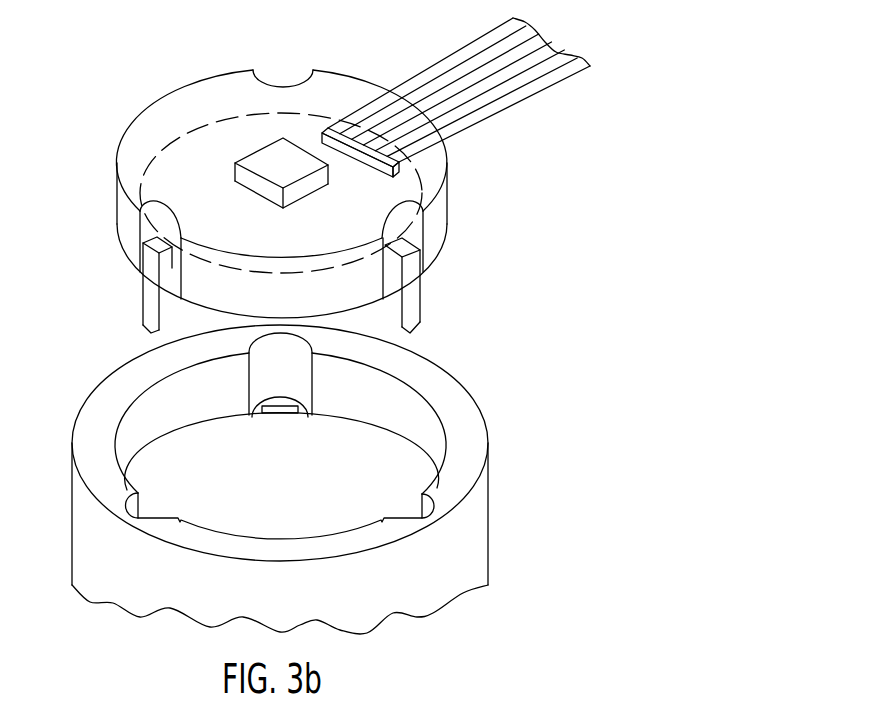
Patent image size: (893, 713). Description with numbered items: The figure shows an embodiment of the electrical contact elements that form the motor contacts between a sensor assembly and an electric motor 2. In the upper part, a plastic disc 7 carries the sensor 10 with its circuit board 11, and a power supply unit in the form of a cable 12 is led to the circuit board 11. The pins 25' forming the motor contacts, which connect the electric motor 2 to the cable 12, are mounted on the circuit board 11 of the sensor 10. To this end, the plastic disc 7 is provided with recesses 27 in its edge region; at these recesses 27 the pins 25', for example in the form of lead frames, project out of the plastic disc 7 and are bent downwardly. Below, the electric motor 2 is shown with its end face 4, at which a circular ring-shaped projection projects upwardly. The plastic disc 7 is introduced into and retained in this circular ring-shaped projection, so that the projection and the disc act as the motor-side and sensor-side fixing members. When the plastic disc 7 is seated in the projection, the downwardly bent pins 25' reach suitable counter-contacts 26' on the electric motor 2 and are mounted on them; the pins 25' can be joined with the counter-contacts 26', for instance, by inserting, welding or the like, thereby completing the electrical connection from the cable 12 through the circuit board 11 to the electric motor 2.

The electric motor 2 is at (497, 539).
The end face 4 is at (340, 445).
The plastic disc 7 is at (110, 131).
The sensor 10 is at (285, 139).
The circuit board 11 is at (326, 128).
The cable 12 is at (437, 72).
The pins 25' is at (280, 285).
The counter-contacts 26' is at (185, 375).
The recesses 27 is at (281, 87).